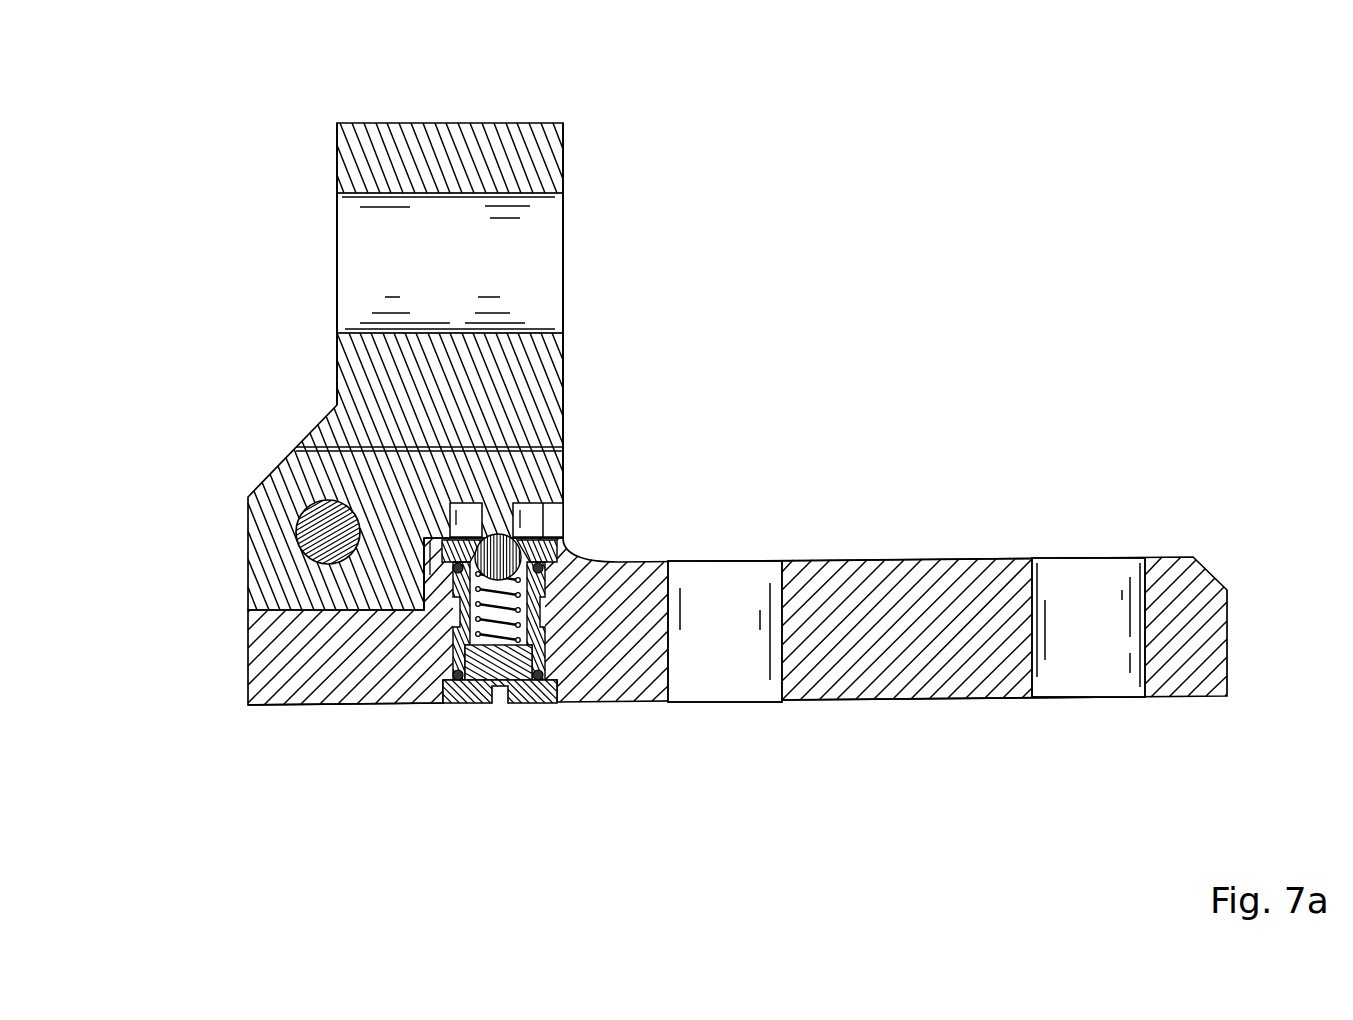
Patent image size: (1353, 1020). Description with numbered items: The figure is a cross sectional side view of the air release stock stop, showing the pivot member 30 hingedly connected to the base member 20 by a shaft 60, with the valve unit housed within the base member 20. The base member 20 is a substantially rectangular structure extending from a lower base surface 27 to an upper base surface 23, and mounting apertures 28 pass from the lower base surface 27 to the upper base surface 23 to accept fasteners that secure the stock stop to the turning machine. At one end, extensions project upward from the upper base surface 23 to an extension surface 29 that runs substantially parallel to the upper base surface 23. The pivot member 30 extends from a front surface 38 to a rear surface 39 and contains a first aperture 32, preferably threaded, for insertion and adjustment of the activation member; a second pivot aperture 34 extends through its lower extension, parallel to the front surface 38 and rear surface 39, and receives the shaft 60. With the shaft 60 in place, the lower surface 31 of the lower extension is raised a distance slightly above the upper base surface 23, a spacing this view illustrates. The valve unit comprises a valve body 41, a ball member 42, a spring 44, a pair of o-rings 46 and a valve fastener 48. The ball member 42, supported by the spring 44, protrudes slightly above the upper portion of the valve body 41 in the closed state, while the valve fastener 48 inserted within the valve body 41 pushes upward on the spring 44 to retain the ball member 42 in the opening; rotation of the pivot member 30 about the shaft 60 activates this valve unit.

The base member 20 is at (882, 542).
The upper base surface 23 is at (970, 560).
The lower base surface 27 is at (893, 698).
The mounting aperture 28 is at (714, 583).
The extension surface 29 is at (415, 630).
The pivot member 30 is at (476, 313).
The lower surface 31 is at (430, 533).
The first aperture 32 is at (540, 265).
The second pivot aperture 34 is at (233, 490).
The front surface 38 is at (337, 156).
The rear surface 39 is at (563, 172).
The valve body 41 is at (463, 622).
The ball member 42 is at (505, 553).
The spring 44 is at (500, 627).
The o-rings 46 is at (545, 567).
The valve fastener 48 is at (520, 690).
The shaft 60 is at (318, 507).